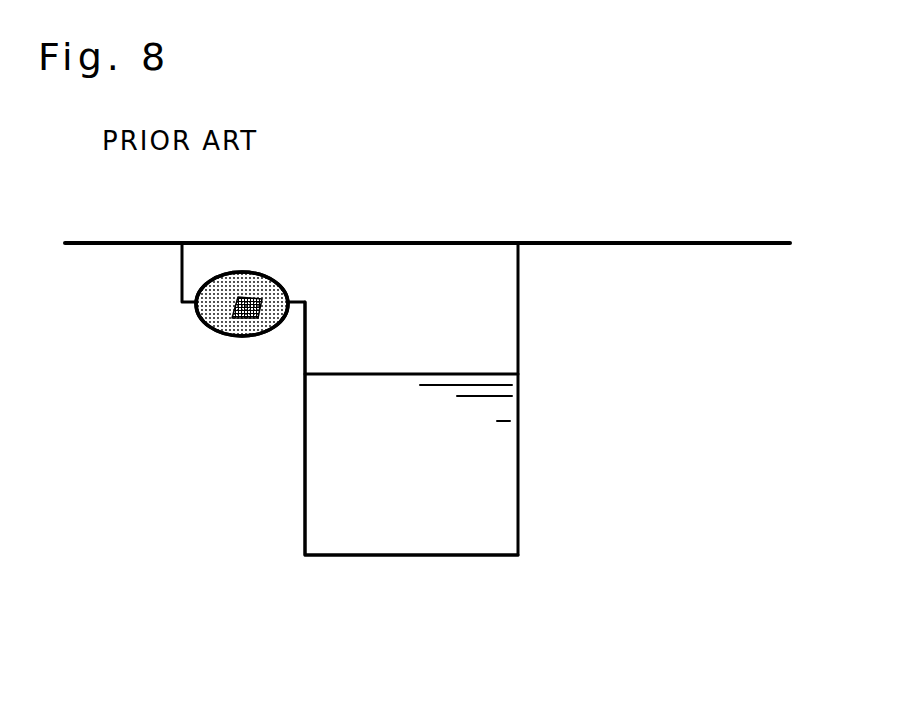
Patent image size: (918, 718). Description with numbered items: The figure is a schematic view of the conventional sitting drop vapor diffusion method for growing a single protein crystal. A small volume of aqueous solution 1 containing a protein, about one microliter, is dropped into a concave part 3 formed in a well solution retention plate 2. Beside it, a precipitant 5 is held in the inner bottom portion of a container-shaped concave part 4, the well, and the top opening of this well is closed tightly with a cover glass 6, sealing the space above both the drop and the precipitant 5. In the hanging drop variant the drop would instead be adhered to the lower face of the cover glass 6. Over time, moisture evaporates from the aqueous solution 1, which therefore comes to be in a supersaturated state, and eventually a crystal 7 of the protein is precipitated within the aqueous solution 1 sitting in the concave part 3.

The aqueous solution 1 is at (217, 310).
The well solution retention plate 2 is at (664, 437).
The concave part 3 is at (274, 276).
The container-shaped concave part 4 is at (304, 455).
The precipitant 5 is at (487, 483).
The cover glass 6 is at (406, 243).
The crystal 7 is at (247, 322).